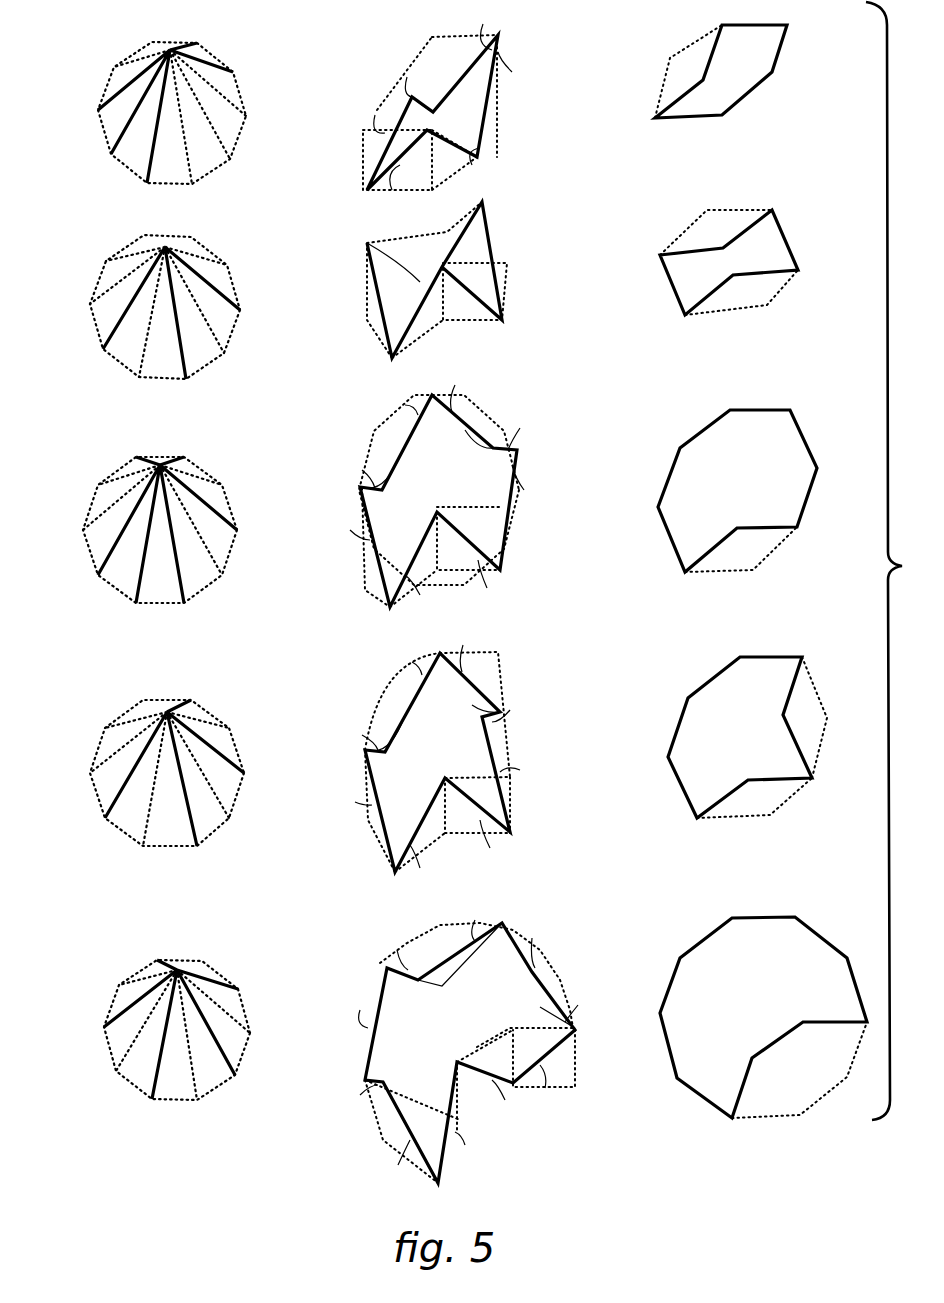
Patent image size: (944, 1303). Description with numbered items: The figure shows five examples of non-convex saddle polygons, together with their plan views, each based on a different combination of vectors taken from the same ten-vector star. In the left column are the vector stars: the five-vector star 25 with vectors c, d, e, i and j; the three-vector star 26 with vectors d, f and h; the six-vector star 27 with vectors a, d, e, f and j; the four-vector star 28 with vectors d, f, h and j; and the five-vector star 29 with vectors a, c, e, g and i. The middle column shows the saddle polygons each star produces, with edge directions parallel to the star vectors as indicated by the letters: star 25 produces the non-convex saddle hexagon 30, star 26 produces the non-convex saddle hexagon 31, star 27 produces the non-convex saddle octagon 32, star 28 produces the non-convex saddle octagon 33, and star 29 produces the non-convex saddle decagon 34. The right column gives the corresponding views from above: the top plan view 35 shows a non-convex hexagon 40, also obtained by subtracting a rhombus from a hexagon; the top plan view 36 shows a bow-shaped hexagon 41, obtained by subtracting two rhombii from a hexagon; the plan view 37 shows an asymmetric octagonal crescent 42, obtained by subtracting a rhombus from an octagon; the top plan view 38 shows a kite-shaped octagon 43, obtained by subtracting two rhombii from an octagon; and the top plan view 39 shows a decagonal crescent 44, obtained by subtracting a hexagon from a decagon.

The 5-star 25 is at (75, 147).
The 3-star 26 is at (75, 343).
The 6-star 27 is at (68, 573).
The 4-star 28 is at (82, 812).
The 5-star 29 is at (95, 1078).
The non-convex saddle hexagon 30 is at (343, 155).
The non-convex saddle hexagon 31 is at (343, 322).
The non-convex saddle octagon 32 is at (340, 558).
The non-convex saddle octagon 33 is at (333, 820).
The non-convex saddle decagon 34 is at (342, 1125).
The top plan view 35 is at (642, 105).
The top plan view 36 is at (645, 283).
The plan view 37 is at (645, 528).
The top plan view 38 is at (657, 773).
The top plan view 39 is at (658, 1077).
The non-convex hexagon 40 is at (772, 72).
The bow-shaped hexagon 41 is at (770, 277).
The asymmetric octagonal crescent 42 is at (803, 507).
The kite-shaped octagon 43 is at (777, 782).
The decagonal crescent 44 is at (738, 1090).